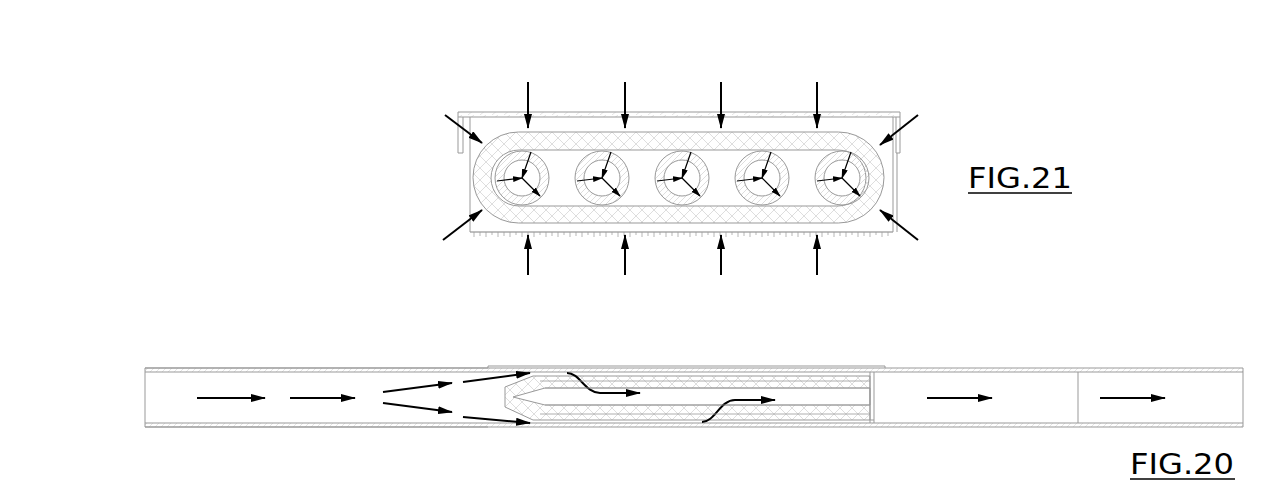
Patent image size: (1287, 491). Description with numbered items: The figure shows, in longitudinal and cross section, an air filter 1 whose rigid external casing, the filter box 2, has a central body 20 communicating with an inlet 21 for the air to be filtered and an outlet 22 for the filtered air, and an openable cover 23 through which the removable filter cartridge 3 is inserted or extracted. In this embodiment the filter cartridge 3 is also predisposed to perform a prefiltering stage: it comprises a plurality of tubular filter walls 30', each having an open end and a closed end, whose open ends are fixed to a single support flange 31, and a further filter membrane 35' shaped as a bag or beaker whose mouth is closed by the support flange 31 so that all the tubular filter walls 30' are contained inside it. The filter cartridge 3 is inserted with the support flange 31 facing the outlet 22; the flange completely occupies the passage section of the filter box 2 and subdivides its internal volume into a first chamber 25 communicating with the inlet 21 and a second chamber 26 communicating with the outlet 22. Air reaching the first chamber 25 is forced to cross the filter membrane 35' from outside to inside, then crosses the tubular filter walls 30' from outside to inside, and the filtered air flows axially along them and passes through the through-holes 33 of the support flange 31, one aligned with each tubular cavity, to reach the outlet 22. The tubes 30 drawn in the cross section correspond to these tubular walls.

In FIG. 21, the air filter 1 is at (455, 111).
In FIG. 20, the air filter 1 is at (200, 350).
In FIG. 21, the filter box 2 is at (485, 239).
In FIG. 20, the filter box 2 is at (405, 426).
In FIG. 20, the filter cartridge 3 is at (882, 391).
In FIG. 21, the central body 20 is at (600, 238).
In FIG. 20, the central body 20 is at (655, 426).
In FIG. 20, the inlet 21 is at (250, 426).
In FIG. 20, the outlet 22 is at (1185, 368).
In FIG. 21, the openable cover 23 is at (678, 112).
In FIG. 20, the openable cover 23 is at (695, 366).
In FIG. 20, the first chamber 25 is at (355, 385).
In FIG. 20, the second chamber 26 is at (1043, 380).
In FIG. 21, the tubes 30 is at (682, 124).
In FIG. 20, the tubular filter walls 30' is at (708, 401).
In FIG. 21, the support flange 31 is at (880, 115).
In FIG. 20, the support flange 31 is at (880, 415).
In FIG. 21, the through-holes 33 is at (518, 150).
In FIG. 21, the filter membrane 35' is at (678, 130).
In FIG. 20, the filter membrane 35' is at (676, 397).